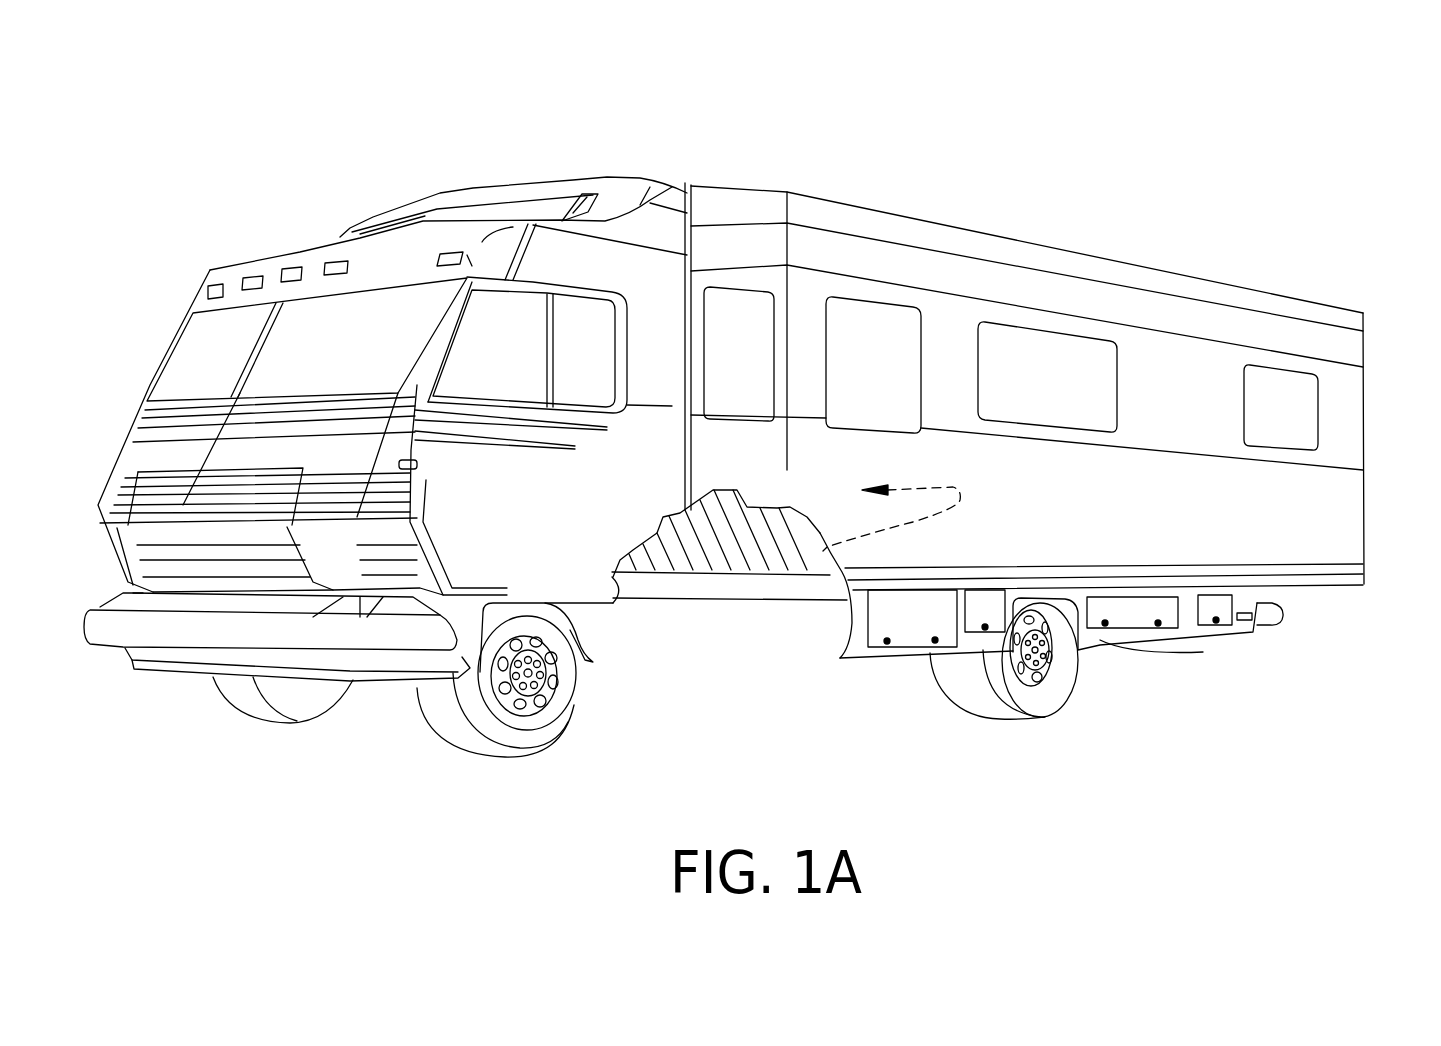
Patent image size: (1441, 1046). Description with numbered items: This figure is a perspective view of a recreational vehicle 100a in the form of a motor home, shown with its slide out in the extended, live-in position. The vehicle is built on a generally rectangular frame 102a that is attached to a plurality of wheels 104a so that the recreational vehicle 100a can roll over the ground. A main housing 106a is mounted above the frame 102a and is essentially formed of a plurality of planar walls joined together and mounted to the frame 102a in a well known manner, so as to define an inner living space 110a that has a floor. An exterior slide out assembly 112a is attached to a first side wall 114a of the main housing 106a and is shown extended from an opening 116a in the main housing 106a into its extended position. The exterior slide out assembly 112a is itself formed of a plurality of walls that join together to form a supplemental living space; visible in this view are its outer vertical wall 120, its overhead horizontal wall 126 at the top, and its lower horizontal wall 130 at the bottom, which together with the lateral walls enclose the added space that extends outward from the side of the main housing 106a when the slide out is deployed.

The recreational vehicle 100a is at (645, 106).
The frame 102a is at (680, 603).
The wheels 104a is at (276, 727).
The main housing 106a is at (620, 171).
The inner living space 110a is at (814, 603).
The exterior slide out assembly 112a is at (940, 243).
The first side wall 114a is at (672, 193).
The opening 116a is at (712, 449).
The outer vertical wall 120 is at (1337, 522).
The overhead horizontal wall 126 is at (1233, 283).
The lower horizontal wall 130 is at (1333, 587).